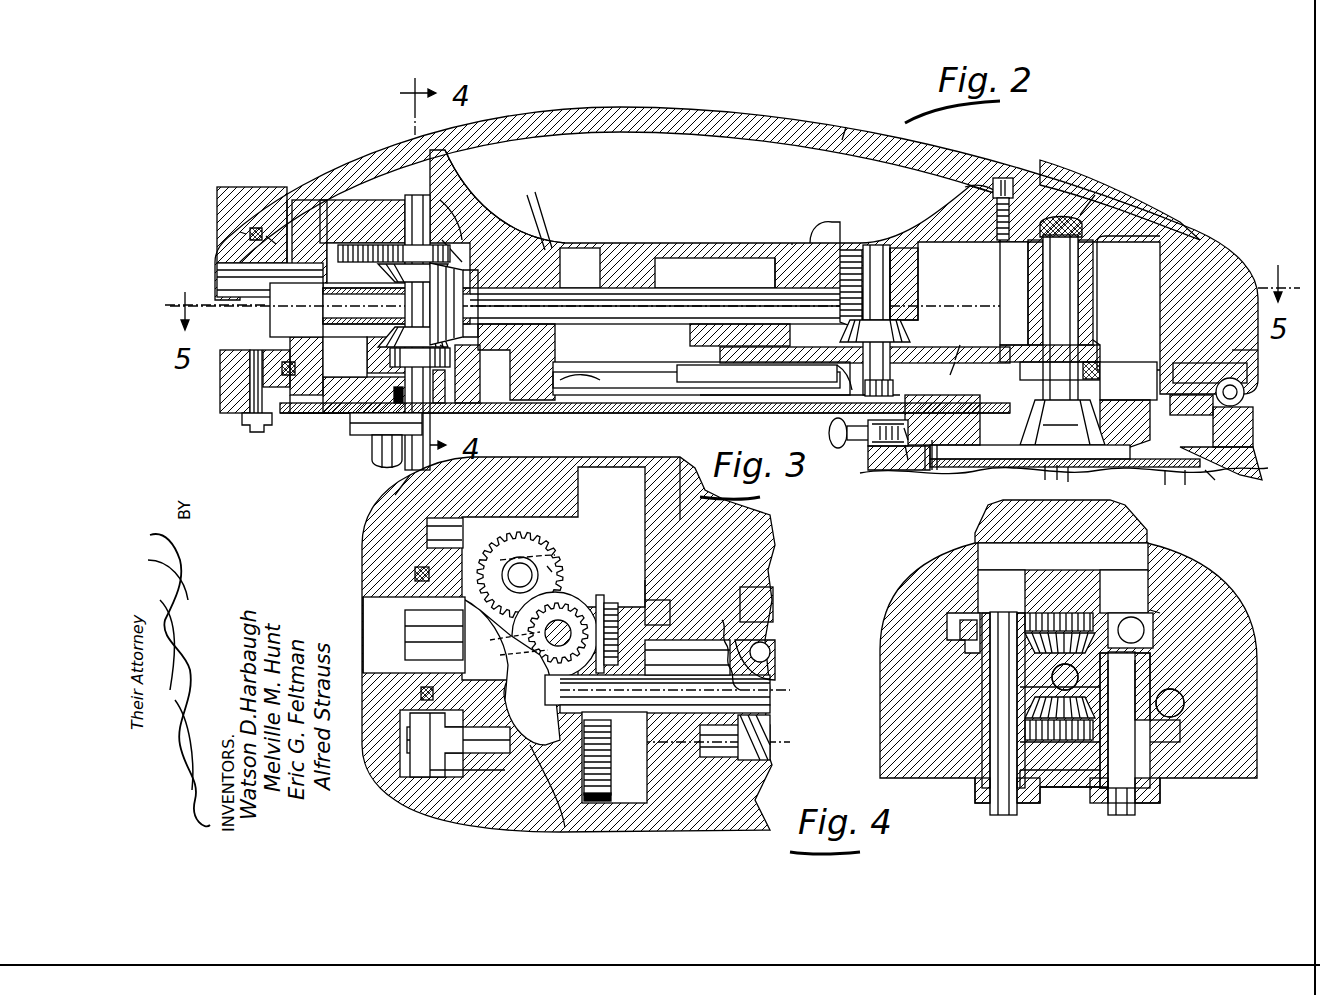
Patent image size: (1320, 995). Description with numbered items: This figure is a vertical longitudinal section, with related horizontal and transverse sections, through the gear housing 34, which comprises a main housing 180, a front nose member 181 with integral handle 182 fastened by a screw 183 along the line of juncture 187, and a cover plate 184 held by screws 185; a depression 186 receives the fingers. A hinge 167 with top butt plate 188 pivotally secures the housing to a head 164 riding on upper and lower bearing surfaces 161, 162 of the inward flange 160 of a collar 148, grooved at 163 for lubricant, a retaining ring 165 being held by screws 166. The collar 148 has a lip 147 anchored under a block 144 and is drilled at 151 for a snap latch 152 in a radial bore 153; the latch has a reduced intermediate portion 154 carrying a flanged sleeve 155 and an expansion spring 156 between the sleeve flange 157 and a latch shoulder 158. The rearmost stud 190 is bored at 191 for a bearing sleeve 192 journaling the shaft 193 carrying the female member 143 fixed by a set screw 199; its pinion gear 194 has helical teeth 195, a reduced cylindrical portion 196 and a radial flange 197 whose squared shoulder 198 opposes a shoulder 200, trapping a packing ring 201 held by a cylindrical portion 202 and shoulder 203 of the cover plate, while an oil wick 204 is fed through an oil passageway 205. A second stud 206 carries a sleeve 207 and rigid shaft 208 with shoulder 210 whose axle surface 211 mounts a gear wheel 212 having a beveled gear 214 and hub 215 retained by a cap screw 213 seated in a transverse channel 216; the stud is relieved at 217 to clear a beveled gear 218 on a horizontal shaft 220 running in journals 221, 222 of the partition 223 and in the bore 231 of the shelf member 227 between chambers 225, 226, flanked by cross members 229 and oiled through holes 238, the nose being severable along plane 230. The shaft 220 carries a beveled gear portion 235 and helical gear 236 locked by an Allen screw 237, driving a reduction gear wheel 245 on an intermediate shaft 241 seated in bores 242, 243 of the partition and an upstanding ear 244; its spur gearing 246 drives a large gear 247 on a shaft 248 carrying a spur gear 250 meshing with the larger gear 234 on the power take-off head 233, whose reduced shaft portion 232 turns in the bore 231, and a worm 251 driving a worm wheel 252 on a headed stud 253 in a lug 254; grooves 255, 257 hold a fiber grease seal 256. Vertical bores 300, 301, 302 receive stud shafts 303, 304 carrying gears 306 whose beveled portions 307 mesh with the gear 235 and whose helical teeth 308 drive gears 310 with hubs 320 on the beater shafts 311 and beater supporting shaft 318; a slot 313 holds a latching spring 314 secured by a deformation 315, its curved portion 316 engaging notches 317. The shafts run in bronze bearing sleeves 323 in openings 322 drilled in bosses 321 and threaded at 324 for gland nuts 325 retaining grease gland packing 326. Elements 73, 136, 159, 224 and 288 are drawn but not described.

In FIG. 2, the housing wall 34 is at (1157, 216).
In FIG. 2, the shaft 73 is at (1070, 467).
In FIG. 2, the sleeve 136 is at (1045, 467).
In FIG. 2, the plate 143 is at (1040, 447).
In FIG. 2, the hinge block 144 is at (1253, 426).
In FIG. 2, the bracket 147 is at (1253, 456).
In FIG. 2, the pin 148 is at (937, 470).
In FIG. 2, the pin 151 is at (932, 470).
In FIG. 2, the bushing 152 is at (925, 470).
In FIG. 2, the block 153 is at (900, 470).
In FIG. 2, the knob shaft 154 is at (865, 445).
In FIG. 2, the spring 155 is at (892, 452).
In FIG. 2, the washer 156 is at (883, 450).
In FIG. 2, the pin 157 is at (875, 448).
In FIG. 2, the collar 158 is at (902, 458).
In FIG. 2, the knob 159 is at (838, 448).
In FIG. 2, the hinge member 160 is at (1245, 402).
In FIG. 2, the plate 161 is at (1245, 368).
In FIG. 2, the arm 162 is at (1210, 470).
In FIG. 2, the link 163 is at (1185, 470).
In FIG. 2, the bracket 164 is at (1035, 425).
In FIG. 2, the plate 165 is at (1030, 455).
In FIG. 2, the arm 166 is at (1165, 491).
In FIG. 2, the pivot pin 167 is at (1245, 384).
In FIG. 2, the housing 180 is at (1160, 240).
In FIG. 2, the housing wall 181 is at (232, 215).
In FIG. 3, the housing wall 181 is at (365, 540).
In FIG. 2, the cover 182 is at (842, 140).
In FIG. 4, the cover 182 is at (1010, 503).
In FIG. 2, the screw 183 is at (1005, 178).
In FIG. 2, the rail 184 is at (590, 386).
In FIG. 2, the bracket 185 is at (365, 438).
In FIG. 2, the cavity 186 is at (760, 180).
In FIG. 2, the boss 187 is at (1000, 195).
In FIG. 2, the housing wall 188 is at (1245, 347).
In FIG. 2, the shaft 190 is at (1078, 275).
In FIG. 2, the bearing 191 is at (1030, 260).
In FIG. 2, the pocket 192 is at (1092, 262).
In FIG. 2, the bearing 193 is at (1062, 293).
In FIG. 2, the plate 194 is at (1088, 360).
In FIG. 2, the sleeve 195 is at (1098, 340).
In FIG. 2, the block 196 is at (1128, 388).
In FIG. 2, the bushing 197 is at (1092, 368).
In FIG. 2, the plate 198 is at (1098, 380).
In FIG. 2, the hub 199 is at (1030, 410).
In FIG. 2, the bracket 200 is at (1125, 423).
In FIG. 2, the pocket 201 is at (1008, 380).
In FIG. 2, the wall 202 is at (950, 375).
In FIG. 2, the wall 203 is at (955, 360).
In FIG. 2, the housing top 204 is at (1080, 215).
In FIG. 2, the cap 205 is at (1065, 225).
In FIG. 2, the bearing 206 is at (900, 270).
In FIG. 2, the bearing block 207 is at (905, 260).
In FIG. 2, the vertical shaft 208 is at (880, 282).
In FIG. 2, the collar 210 is at (892, 302).
In FIG. 2, the bevel gear 211 is at (905, 322).
In FIG. 2, the plate 212 is at (775, 340).
In FIG. 2, the plate 213 is at (830, 418).
In FIG. 2, the rail 214 is at (828, 384).
In FIG. 2, the bracket 215 is at (830, 401).
In FIG. 2, the block 216 is at (910, 399).
In FIG. 2, the bevel gear 217 is at (895, 250).
In FIG. 2, the bracket 218 is at (850, 262).
In FIG. 2, the main shaft 220 is at (668, 316).
In FIG. 3, the main shaft 220 is at (690, 626).
In FIG. 2, the pocket 221 is at (580, 268).
In FIG. 2, the pocket 222 is at (749, 273).
In FIG. 2, the frame block 223 is at (560, 338).
In FIG. 3, the frame block 223 is at (690, 535).
In FIG. 2, the block 224 is at (775, 322).
In FIG. 2, the frame 225 is at (325, 192).
In FIG. 2, the base 226 is at (328, 414).
In FIG. 2, the pocket 227 is at (345, 356).
In FIG. 2, the gear housing 229 is at (388, 212).
In FIG. 4, the gear housing 229 is at (1085, 574).
In FIG. 2, the stud 230 is at (305, 415).
In FIG. 3, the stud 230 is at (390, 500).
In FIG. 2, the pocket 231 is at (366, 263).
In FIG. 2, the input shaft 232 is at (268, 286).
In FIG. 4, the input shaft 232 is at (1020, 687).
In FIG. 2, the pocket 233 is at (270, 327).
In FIG. 3, the pocket 233 is at (425, 575).
In FIG. 2, the wall 234 is at (268, 384).
In FIG. 3, the wall 234 is at (400, 558).
In FIG. 2, the bevel gear 235 is at (458, 272).
In FIG. 3, the bevel gear 235 is at (663, 585).
In FIG. 2, the gear hub 236 is at (448, 330).
In FIG. 3, the gear hub 236 is at (670, 610).
In FIG. 2, the collar 237 is at (448, 345).
In FIG. 2, the wall 238 is at (650, 183).
In FIG. 3, the bearing 241 is at (686, 706).
In FIG. 4, the bearing 241 is at (1137, 626).
In FIG. 3, the shaft 242 is at (690, 758).
In FIG. 3, the shaft 243 is at (667, 690).
In FIG. 3, the housing 244 is at (525, 810).
In FIG. 4, the housing 244 is at (1160, 612).
In FIG. 3, the shaft 245 is at (686, 686).
In FIG. 3, the gear 246 is at (606, 768).
In FIG. 3, the block 247 is at (611, 795).
In FIG. 3, the pin 248 is at (405, 762).
In FIG. 4, the pin 248 is at (1170, 700).
In FIG. 3, the flange 250 is at (448, 785).
In FIG. 3, the spring 251 is at (770, 746).
In FIG. 3, the rack 252 is at (765, 695).
In FIG. 3, the bearing 253 is at (775, 648).
In FIG. 2, the block 254 is at (715, 273).
In FIG. 3, the block 254 is at (773, 600).
In FIG. 2, the seal 255 is at (268, 238).
In FIG. 2, the seal 256 is at (258, 228).
In FIG. 3, the seal 256 is at (427, 536).
In FIG. 2, the wall 257 is at (242, 232).
In FIG. 2, the base plate 288 is at (462, 414).
In FIG. 2, the gear band 300 is at (392, 352).
In FIG. 2, the shaft 301 is at (631, 310).
In FIG. 2, the link 302 is at (452, 215).
In FIG. 2, the lever 303 is at (440, 192).
In FIG. 3, the lever 303 is at (545, 638).
In FIG. 2, the bolt 304 is at (420, 413).
In FIG. 2, the bevel gear 306 is at (448, 266).
In FIG. 2, the gear 307 is at (442, 240).
In FIG. 3, the gear 307 is at (572, 612).
In FIG. 4, the gear 307 is at (1090, 598).
In FIG. 2, the gear 308 is at (450, 250).
In FIG. 3, the gear 308 is at (563, 597).
In FIG. 4, the gear 308 is at (1090, 583).
In FIG. 2, the shaft 310 is at (370, 243).
In FIG. 3, the shaft 310 is at (537, 557).
In FIG. 4, the shaft 310 is at (948, 618).
In FIG. 2, the shaft 311 is at (380, 458).
In FIG. 3, the shaft 311 is at (517, 558).
In FIG. 4, the shaft 311 is at (1005, 813).
In FIG. 4, the sleeve 313 is at (1133, 676).
In FIG. 4, the sleeve wall 314 is at (1120, 682).
In FIG. 4, the shaft 315 is at (1127, 709).
In FIG. 4, the boss 316 is at (1003, 647).
In FIG. 3, the pocket 317 is at (565, 527).
In FIG. 4, the pocket 317 is at (1003, 692).
In FIG. 3, the shaft 318 is at (547, 566).
In FIG. 4, the shaft 318 is at (977, 768).
In FIG. 4, the block 320 is at (980, 627).
In FIG. 4, the foot 321 is at (977, 796).
In FIG. 4, the plate 322 is at (1033, 722).
In FIG. 3, the pin 323 is at (450, 642).
In FIG. 4, the pin 323 is at (1050, 672).
In FIG. 4, the recess 324 is at (1037, 798).
In FIG. 4, the foot 325 is at (1127, 813).
In FIG. 4, the foot 326 is at (960, 785).